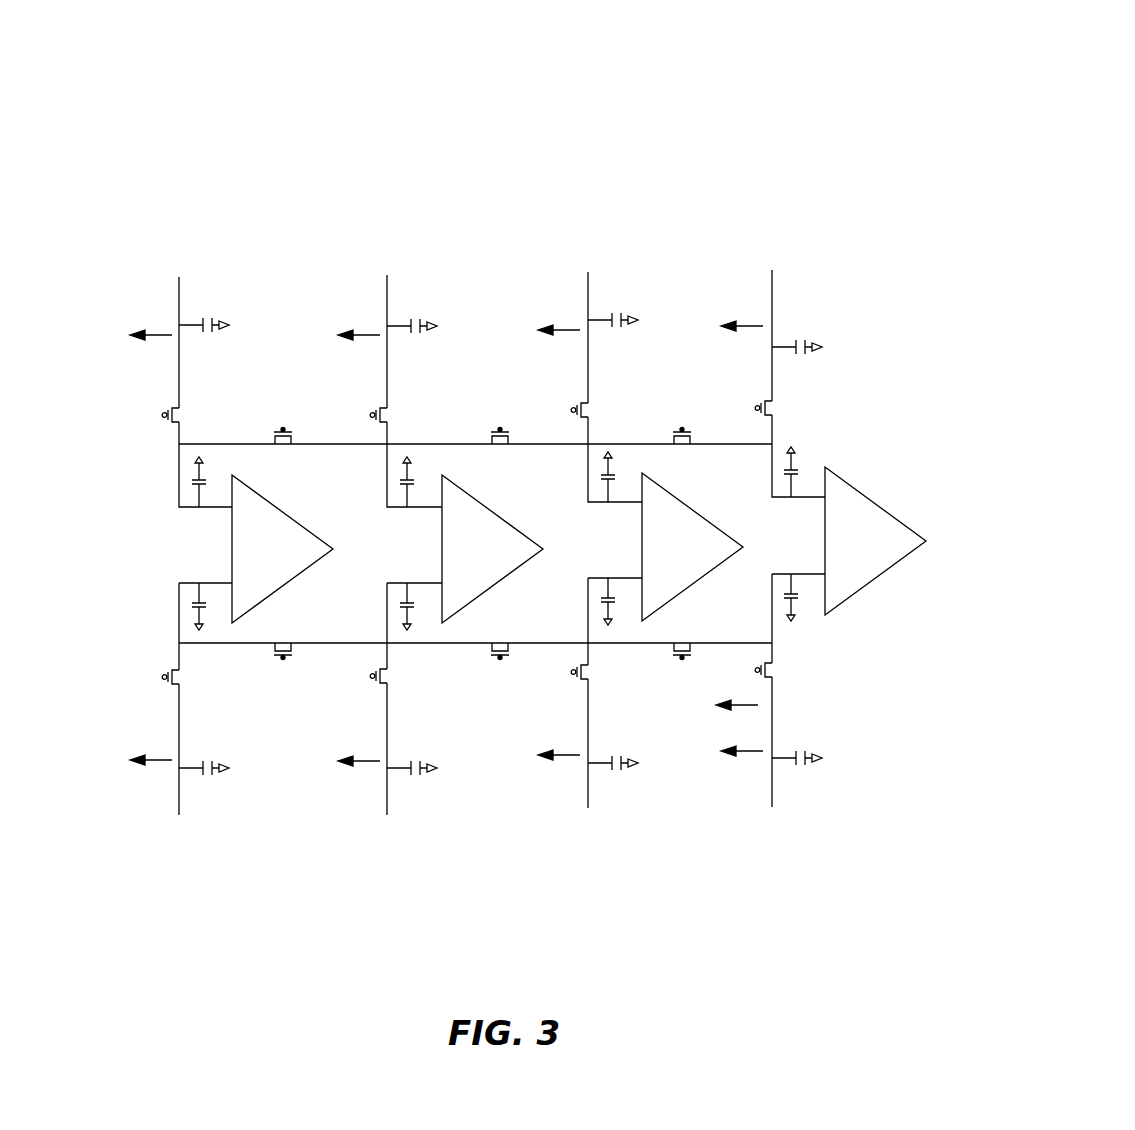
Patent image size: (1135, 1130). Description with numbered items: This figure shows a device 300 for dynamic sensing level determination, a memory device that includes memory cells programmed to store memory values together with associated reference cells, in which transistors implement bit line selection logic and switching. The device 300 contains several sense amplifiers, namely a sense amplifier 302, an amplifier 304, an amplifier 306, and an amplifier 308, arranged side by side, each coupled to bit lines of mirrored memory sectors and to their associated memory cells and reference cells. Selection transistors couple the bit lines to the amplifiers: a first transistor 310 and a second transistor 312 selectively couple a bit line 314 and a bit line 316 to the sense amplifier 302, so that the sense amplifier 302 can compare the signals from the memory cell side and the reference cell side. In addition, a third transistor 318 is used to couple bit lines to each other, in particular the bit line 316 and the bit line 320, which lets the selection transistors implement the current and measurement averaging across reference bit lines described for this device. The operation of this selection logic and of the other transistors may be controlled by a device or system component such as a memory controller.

The device 300 is at (752, 40).
The sense amplifier 302 is at (230, 548).
The amplifier 304 is at (442, 475).
The amplifier 306 is at (642, 473).
The amplifier 308 is at (850, 480).
The first transistor 310 is at (165, 412).
The second transistor 312 is at (165, 675).
The bit line 314 is at (175, 298).
The bit line 316 is at (175, 745).
The third transistor 318 is at (290, 667).
The bit line 320 is at (397, 813).